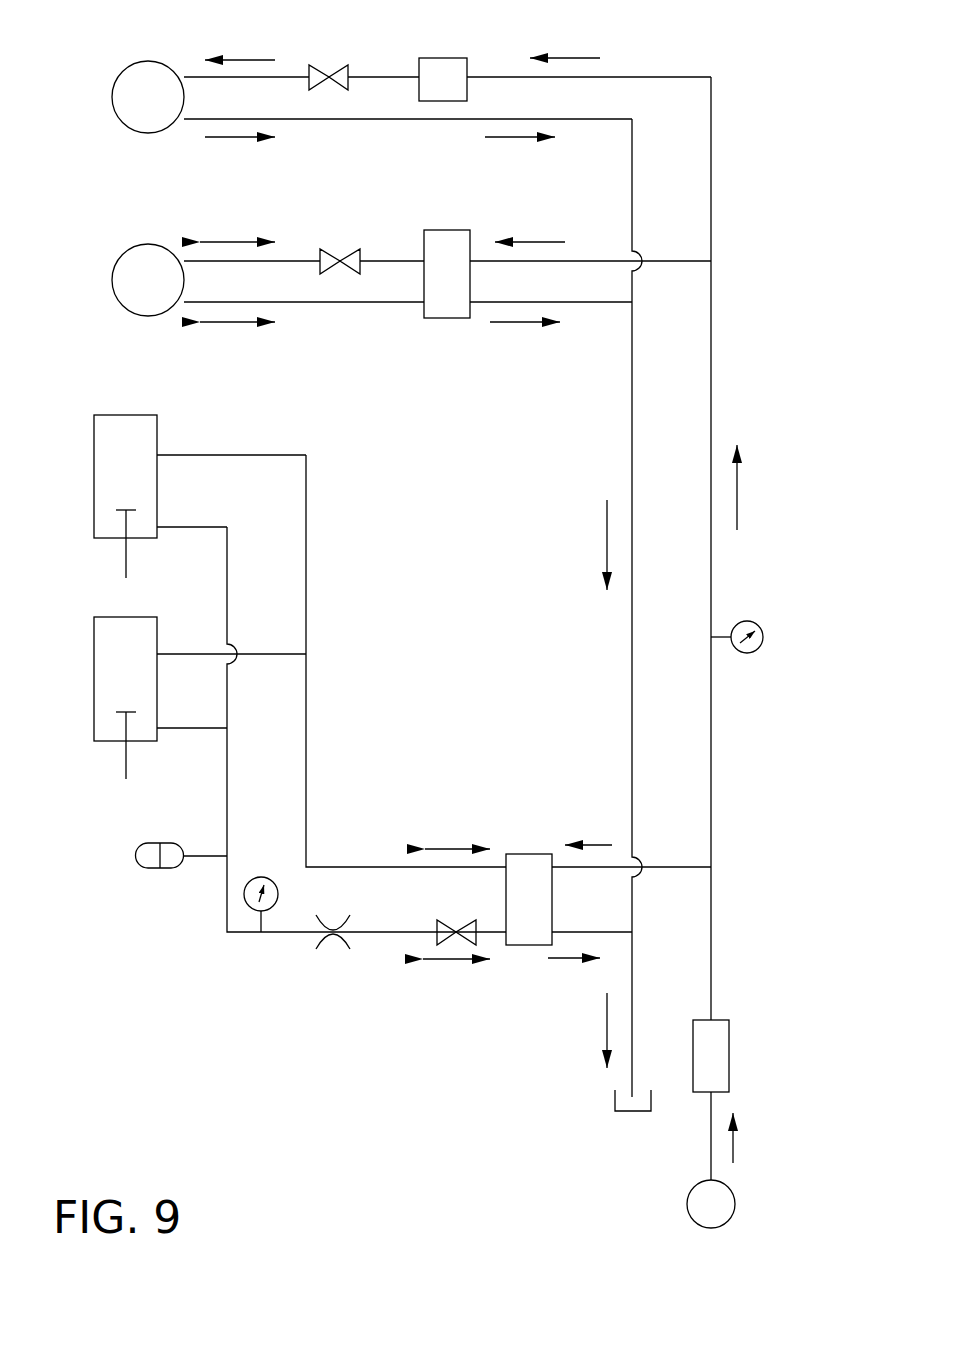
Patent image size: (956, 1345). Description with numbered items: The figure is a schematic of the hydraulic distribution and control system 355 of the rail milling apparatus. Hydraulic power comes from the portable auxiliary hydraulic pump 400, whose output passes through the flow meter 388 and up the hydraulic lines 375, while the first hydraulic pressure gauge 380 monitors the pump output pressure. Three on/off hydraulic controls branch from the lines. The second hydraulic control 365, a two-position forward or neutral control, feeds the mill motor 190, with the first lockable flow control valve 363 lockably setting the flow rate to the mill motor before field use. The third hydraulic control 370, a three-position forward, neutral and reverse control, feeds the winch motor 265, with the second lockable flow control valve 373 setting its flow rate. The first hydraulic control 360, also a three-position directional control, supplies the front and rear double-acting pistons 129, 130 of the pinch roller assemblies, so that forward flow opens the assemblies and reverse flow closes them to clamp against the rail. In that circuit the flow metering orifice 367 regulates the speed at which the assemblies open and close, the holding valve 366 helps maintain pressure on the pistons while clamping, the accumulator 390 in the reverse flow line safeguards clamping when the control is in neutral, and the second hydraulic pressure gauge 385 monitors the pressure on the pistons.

The hydraulic distribution and control system 355 is at (840, 68).
The mill motor 190 is at (128, 70).
The winch motor 265 is at (128, 250).
The first lockable flow control valve 363 is at (322, 66).
The second hydraulic control 365 is at (452, 58).
The second lockable flow control valve 373 is at (333, 250).
The third hydraulic control 370 is at (424, 231).
The hydraulic lines 375 is at (722, 348).
The front double-acting piston 129 is at (94, 425).
The rear double-acting piston 130 is at (94, 630).
The first hydraulic pressure gauge 380 is at (755, 625).
The accumulator 390 is at (138, 849).
The second hydraulic pressure gauge 385 is at (244, 896).
The flow metering orifice 367 is at (344, 947).
The holding valve 366 is at (467, 924).
The first hydraulic control 360 is at (520, 854).
The flow meter 388 is at (729, 1040).
The auxiliary hydraulic pump 400 is at (736, 1204).